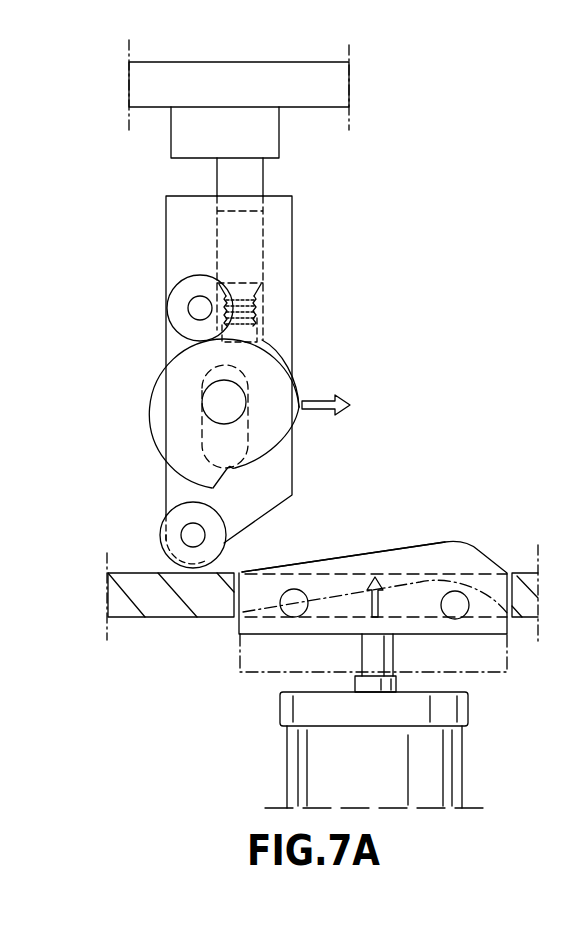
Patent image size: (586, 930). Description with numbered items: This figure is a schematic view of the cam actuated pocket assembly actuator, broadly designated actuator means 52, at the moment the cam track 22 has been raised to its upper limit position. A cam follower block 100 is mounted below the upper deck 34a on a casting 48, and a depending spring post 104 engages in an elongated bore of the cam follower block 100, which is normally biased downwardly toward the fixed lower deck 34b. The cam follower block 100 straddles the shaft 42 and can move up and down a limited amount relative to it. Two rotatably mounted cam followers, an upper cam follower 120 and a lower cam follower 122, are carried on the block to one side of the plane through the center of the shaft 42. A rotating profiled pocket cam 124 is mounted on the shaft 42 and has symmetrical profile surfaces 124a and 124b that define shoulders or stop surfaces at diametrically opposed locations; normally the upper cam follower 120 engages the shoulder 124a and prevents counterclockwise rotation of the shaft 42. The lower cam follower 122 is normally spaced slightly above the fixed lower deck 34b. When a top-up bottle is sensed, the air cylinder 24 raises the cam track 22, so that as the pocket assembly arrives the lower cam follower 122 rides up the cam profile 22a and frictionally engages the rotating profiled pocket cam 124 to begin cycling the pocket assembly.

The upper deck 34a is at (343, 88).
The casting 48 is at (267, 140).
The spring post 104 is at (227, 178).
The actuator means 52 is at (296, 212).
The cam follower block 100 is at (283, 247).
The upper cam follower 120 is at (178, 278).
The lower cam follower 122 is at (168, 505).
The rotating profiled pocket cam 124 is at (257, 406).
The profile surface 124a is at (260, 334).
The profile surface 124b is at (246, 490).
The shaft 42 is at (213, 398).
The fixed lower deck 34b is at (177, 617).
The cam track 22 is at (394, 606).
The cam profile 22a is at (342, 559).
The air cylinder 24 is at (455, 772).